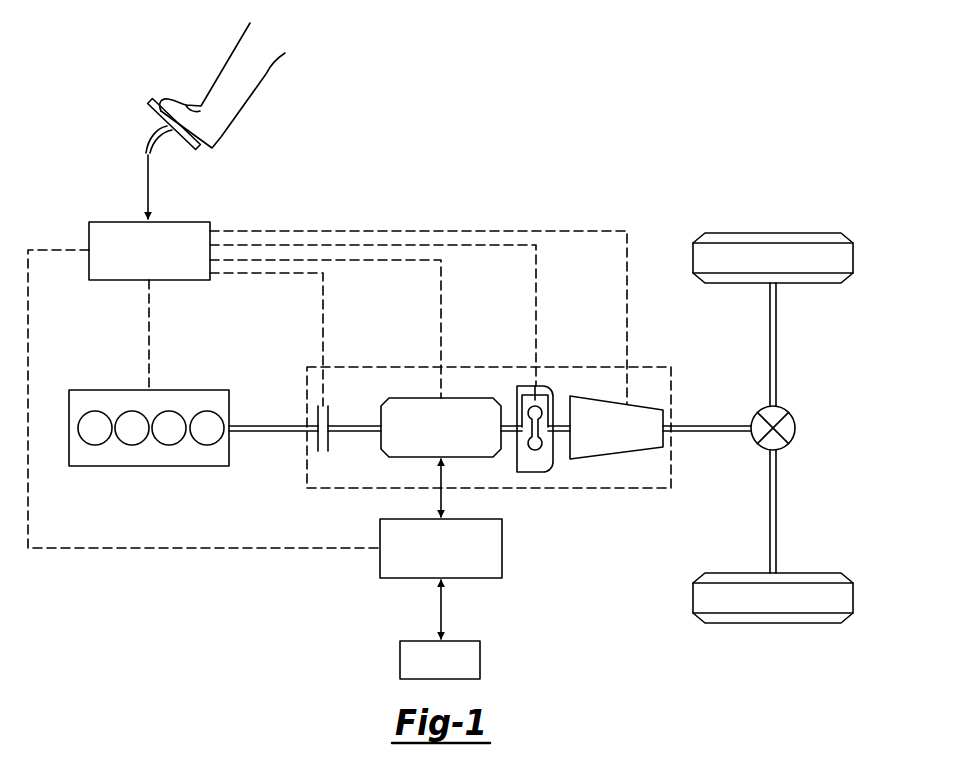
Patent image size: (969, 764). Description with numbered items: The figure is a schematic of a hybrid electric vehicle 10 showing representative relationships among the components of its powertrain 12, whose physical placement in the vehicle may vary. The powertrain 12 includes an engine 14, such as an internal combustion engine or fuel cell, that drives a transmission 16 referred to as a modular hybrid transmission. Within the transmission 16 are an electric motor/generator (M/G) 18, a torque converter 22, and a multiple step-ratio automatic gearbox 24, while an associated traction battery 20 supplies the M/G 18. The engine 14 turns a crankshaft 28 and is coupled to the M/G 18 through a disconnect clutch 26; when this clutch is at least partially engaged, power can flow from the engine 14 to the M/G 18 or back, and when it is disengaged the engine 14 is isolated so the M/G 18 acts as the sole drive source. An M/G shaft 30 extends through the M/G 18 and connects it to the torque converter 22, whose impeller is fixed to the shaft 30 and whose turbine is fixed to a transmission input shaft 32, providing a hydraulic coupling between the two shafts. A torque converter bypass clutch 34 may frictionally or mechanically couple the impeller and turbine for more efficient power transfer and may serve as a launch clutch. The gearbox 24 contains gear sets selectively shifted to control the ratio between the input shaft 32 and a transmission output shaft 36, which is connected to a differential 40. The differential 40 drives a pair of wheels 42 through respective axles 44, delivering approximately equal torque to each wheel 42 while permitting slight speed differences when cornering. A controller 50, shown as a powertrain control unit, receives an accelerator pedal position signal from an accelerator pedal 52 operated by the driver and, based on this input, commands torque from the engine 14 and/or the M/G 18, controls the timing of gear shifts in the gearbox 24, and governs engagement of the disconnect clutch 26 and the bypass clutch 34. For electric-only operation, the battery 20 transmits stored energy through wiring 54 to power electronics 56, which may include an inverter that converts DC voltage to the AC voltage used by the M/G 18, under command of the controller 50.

The hybrid electric vehicle 10 is at (647, 168).
The powertrain 12 is at (259, 588).
The engine 14 is at (87, 390).
The transmission 16 is at (475, 362).
The electric motor/generator 18 is at (421, 398).
The traction battery 20 is at (400, 660).
The torque converter 22 is at (533, 472).
The gearbox 24 is at (612, 459).
The disconnect clutch 26 is at (319, 451).
The crankshaft 28 is at (293, 426).
The M/G shaft 30 is at (359, 426).
The transmission input shaft 32 is at (557, 426).
The torque converter bypass clutch 34 is at (536, 386).
The transmission output shaft 36 is at (720, 426).
The differential 40 is at (795, 428).
The wheels 42 is at (741, 233).
The axles 44 is at (777, 343).
The controller 50 is at (102, 221).
The accelerator pedal 52 is at (147, 117).
The wiring 54 is at (441, 610).
The power electronics 56 is at (502, 548).